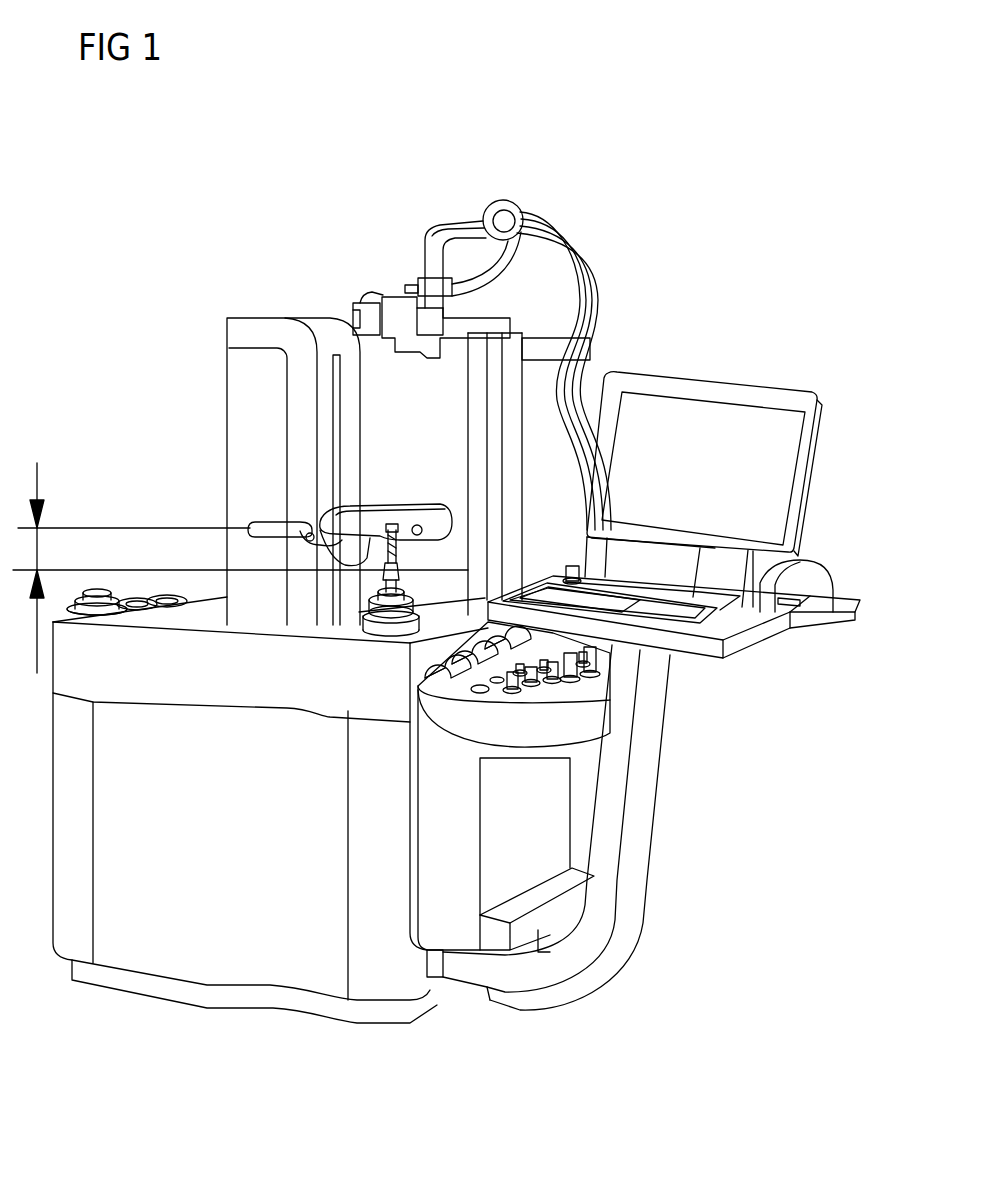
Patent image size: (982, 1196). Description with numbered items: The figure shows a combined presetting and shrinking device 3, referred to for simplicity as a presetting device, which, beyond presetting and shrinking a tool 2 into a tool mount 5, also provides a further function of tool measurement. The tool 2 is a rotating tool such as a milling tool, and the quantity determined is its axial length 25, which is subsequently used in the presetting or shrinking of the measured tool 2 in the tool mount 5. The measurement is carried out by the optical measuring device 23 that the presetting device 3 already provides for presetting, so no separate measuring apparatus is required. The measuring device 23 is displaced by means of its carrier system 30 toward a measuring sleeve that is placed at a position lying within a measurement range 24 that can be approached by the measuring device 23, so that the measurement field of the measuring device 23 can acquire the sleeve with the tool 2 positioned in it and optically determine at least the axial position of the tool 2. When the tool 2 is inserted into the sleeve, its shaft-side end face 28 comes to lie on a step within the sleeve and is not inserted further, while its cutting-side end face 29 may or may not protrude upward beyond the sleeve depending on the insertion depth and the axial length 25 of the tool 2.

The combined presetting and shrinking device 3 is at (662, 256).
The tool 2 is at (397, 547).
The tool mount 5 is at (500, 756).
The optical measuring device 23 is at (423, 517).
The measurement range 24 is at (460, 500).
The axial length 25 is at (37, 542).
The shaft-side end face 28 is at (573, 603).
The cutting-side end face 29 is at (393, 530).
The carrier system 30 is at (273, 527).